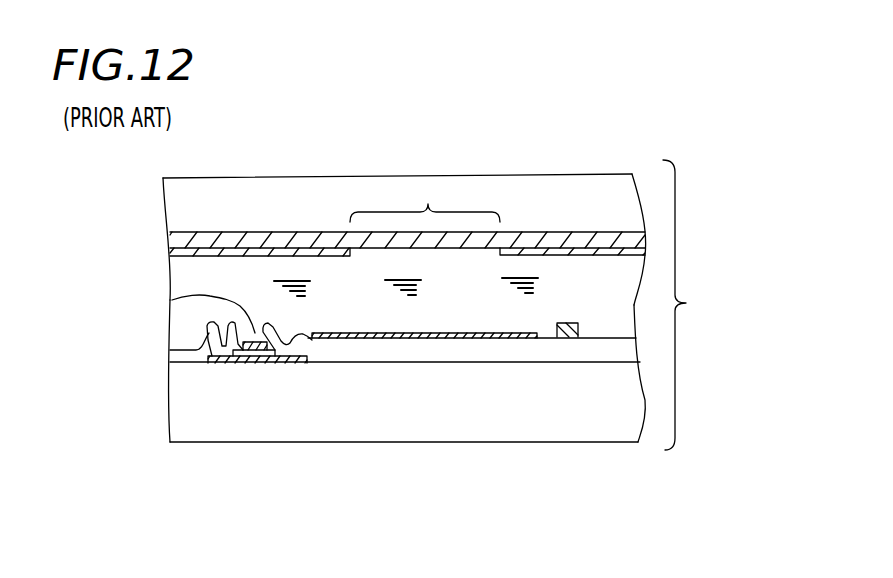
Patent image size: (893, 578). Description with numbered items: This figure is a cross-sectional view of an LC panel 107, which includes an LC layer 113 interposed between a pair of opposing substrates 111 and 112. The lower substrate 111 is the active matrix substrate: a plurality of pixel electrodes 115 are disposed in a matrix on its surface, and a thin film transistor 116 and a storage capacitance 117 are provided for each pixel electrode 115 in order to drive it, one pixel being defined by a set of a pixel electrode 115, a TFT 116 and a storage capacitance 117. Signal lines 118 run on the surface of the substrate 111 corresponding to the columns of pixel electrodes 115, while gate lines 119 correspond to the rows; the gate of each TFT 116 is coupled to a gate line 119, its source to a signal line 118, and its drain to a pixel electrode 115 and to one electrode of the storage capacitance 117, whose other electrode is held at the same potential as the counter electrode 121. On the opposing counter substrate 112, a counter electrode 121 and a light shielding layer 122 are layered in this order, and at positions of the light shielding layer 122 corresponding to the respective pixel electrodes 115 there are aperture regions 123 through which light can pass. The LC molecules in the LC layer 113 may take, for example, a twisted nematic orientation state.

The LC panel 107 is at (701, 305).
The substrate 111 is at (613, 427).
The counter substrate 112 is at (303, 190).
The LC layer 113 is at (182, 324).
The pixel electrode 115 is at (427, 342).
The thin film transistor 116 is at (258, 372).
The storage capacitance 117 is at (560, 340).
The signal line 118 is at (216, 365).
The gate line 119 is at (176, 300).
The counter electrode 121 is at (228, 240).
The light shielding layer 122 is at (584, 258).
The aperture region 123 is at (428, 202).